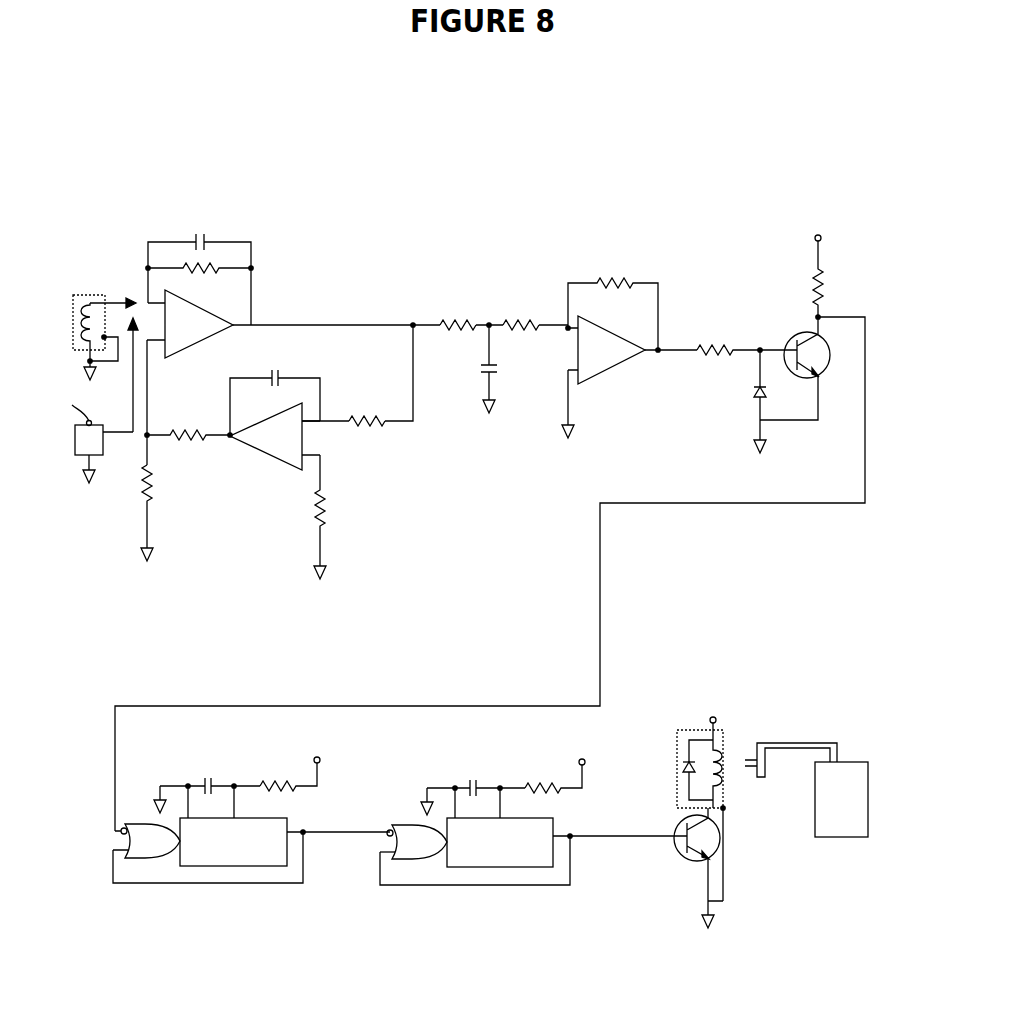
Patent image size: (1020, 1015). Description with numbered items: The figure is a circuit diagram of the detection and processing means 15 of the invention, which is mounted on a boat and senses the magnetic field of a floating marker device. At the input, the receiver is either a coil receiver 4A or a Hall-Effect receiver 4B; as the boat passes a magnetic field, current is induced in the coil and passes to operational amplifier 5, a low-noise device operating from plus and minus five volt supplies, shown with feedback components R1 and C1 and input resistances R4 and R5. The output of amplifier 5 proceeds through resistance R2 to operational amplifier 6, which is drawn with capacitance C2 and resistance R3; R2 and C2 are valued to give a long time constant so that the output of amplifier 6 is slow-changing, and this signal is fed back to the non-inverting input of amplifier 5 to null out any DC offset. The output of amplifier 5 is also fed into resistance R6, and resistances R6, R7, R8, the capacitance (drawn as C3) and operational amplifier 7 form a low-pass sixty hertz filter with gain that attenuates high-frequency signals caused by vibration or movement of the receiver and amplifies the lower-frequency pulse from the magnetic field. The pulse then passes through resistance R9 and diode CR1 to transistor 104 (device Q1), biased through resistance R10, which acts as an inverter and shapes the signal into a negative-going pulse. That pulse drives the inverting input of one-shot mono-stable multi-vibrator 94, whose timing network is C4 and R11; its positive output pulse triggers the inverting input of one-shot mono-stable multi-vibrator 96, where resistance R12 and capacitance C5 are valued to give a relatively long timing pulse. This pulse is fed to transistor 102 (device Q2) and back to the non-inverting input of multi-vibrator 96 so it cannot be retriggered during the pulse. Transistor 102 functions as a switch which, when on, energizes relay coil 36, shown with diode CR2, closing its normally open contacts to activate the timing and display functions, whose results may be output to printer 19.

The coil receiver 4A is at (90, 300).
The Hall-Effect receiver 4B is at (93, 448).
The operational amplifier 5 is at (215, 335).
The operational amplifier 6 is at (250, 445).
The operational amplifier 7 is at (600, 372).
The detection and processing means 15 is at (431, 178).
The printer 19 is at (838, 840).
The relay coil 36 is at (682, 730).
The one-shot mono-stable multi-vibrator 94 is at (225, 868).
The one-shot mono-stable multi-vibrator 96 is at (487, 868).
The transistor 102 is at (675, 855).
The transistor 104 is at (790, 330).
The capacitance C1 is at (205, 240).
The capacitance C2 is at (280, 378).
The capacitance C3 is at (498, 370).
The capacitance C4 is at (210, 783).
The capacitance C5 is at (478, 786).
The resistance R1 is at (205, 270).
The resistance R2 is at (365, 420).
The resistance R3 is at (325, 495).
The resistance R4 is at (185, 430).
The resistance R5 is at (150, 478).
The resistance R6 is at (445, 325).
The resistance R7 is at (510, 325).
The resistance R8 is at (612, 282).
The resistance R9 is at (708, 348).
The resistance R10 is at (818, 268).
The resistance R11 is at (283, 786).
The resistance R12 is at (540, 788).
The diode CR1 is at (758, 398).
The diode CR2 is at (685, 770).
The transistor Q1 is at (830, 362).
The transistor Q2 is at (715, 855).